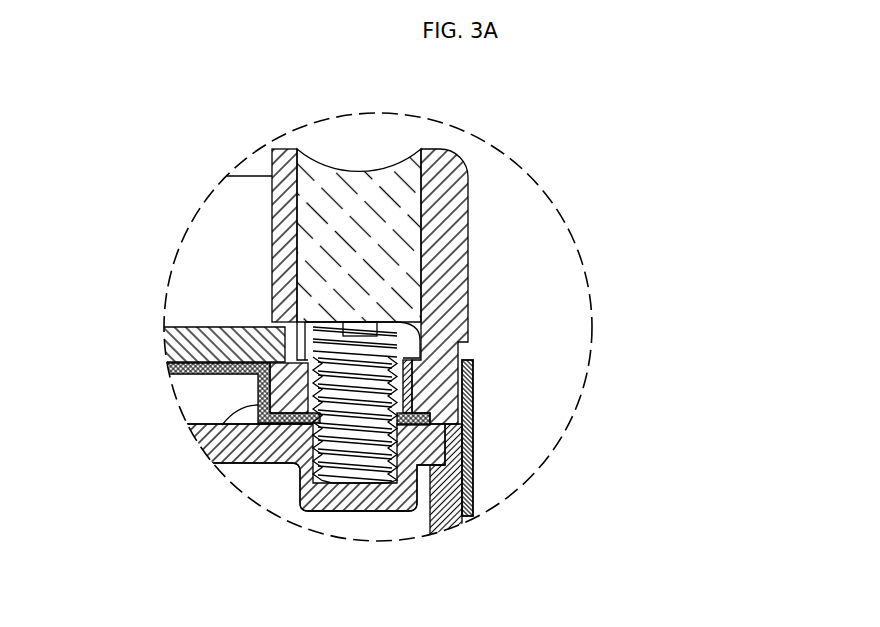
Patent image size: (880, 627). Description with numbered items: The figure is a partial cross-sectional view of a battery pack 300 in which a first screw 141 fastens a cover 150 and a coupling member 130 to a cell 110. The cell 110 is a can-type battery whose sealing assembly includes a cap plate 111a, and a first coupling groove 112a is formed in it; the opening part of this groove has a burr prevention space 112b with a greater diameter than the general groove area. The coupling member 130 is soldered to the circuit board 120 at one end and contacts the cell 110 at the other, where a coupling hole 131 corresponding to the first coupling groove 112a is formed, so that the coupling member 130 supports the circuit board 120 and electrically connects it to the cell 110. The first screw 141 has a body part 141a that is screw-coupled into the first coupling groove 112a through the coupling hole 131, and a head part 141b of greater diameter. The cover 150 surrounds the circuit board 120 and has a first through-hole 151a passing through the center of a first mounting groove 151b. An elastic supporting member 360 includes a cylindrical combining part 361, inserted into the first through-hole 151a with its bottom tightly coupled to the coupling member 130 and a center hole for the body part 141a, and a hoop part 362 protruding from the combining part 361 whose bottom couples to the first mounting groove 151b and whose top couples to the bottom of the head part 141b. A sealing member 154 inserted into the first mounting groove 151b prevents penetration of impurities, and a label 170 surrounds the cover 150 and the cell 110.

The battery pack 300 is at (516, 152).
The cell 110 is at (382, 508).
The cap plate 111a is at (338, 513).
The first coupling groove 112a is at (385, 505).
The burr prevention space 112b is at (462, 470).
The circuit board 120 is at (197, 353).
The coupling member 130 is at (212, 432).
The coupling hole 131 is at (262, 455).
The first screw 141 is at (526, 388).
The body part 141a is at (422, 349).
The head part 141b is at (418, 328).
The cover 150 is at (342, 286).
The first through-hole 151a is at (262, 386).
The first mounting groove 151b is at (293, 297).
The sealing member 154 is at (367, 196).
The label 170 is at (468, 437).
The elastic supporting member 360 is at (559, 396).
The combining part 361 is at (447, 390).
The hoop part 362 is at (413, 363).